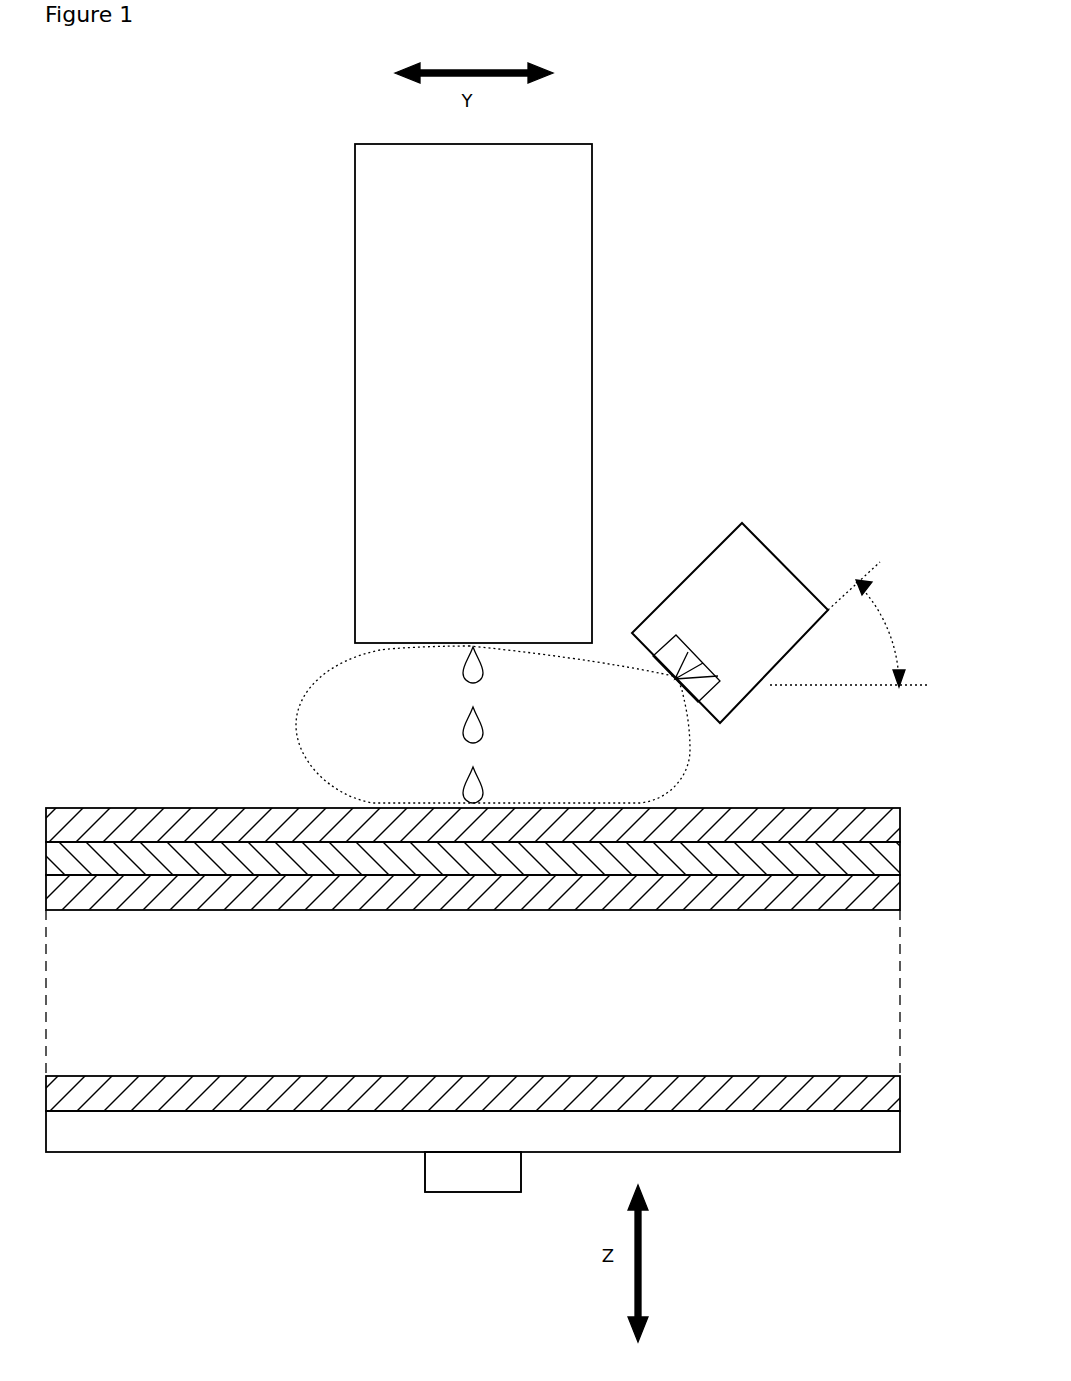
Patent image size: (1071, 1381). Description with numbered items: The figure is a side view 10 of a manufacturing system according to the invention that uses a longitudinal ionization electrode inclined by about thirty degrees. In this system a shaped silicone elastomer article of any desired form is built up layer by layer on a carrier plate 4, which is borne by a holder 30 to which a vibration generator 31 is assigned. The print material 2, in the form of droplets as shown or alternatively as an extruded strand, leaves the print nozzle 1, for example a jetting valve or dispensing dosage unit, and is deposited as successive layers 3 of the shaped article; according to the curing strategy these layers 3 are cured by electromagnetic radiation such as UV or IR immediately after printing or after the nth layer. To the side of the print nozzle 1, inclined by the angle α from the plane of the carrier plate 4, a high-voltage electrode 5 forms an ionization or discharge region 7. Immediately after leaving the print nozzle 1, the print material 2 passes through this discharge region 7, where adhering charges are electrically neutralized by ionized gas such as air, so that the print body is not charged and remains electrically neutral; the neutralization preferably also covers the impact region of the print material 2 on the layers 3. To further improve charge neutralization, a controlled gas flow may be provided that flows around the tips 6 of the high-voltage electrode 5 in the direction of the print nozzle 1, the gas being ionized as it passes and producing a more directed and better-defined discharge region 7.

The print nozzle 1 is at (403, 371).
The print material 2 is at (475, 727).
The layers of the shaped article 3 is at (220, 828).
The carrier plate 4 is at (296, 1132).
The high-voltage electrode 5 is at (755, 572).
The tips of the high-voltage electrode 6 is at (738, 698).
The ionization region 7 is at (622, 742).
The side view of manufacturing system 10 is at (778, 201).
The holder of the carrier plate 30 is at (453, 1165).
The vibration generator 31 is at (453, 1165).